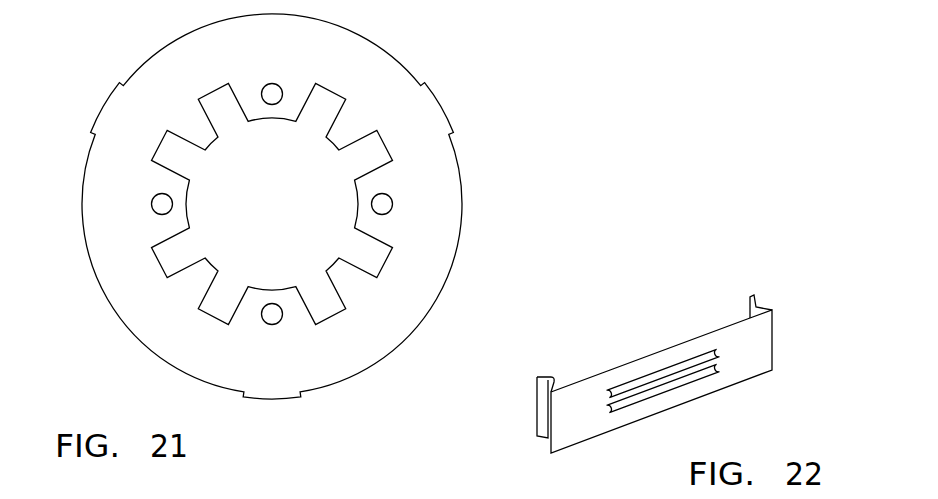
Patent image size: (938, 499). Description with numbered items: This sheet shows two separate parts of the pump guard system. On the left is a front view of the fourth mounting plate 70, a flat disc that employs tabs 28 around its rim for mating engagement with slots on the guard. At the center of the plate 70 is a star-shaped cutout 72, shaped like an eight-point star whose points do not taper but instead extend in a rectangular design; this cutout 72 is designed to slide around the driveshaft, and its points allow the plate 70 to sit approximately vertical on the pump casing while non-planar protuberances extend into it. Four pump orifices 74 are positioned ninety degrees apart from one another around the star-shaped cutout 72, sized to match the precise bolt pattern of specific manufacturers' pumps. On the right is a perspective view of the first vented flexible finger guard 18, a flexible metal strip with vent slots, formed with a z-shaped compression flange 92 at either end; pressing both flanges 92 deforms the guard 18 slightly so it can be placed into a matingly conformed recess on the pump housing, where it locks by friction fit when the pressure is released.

In FIG. 21, the fourth mounting plate 70 is at (96, 71).
In FIG. 21, the tabs 28 is at (444, 103).
In FIG. 21, the star-shaped cutout 72 is at (280, 202).
In FIG. 21, the pump orifices 74 is at (283, 87).
In FIG. 22, the first vented flexible finger guard 18 is at (662, 298).
In FIG. 22, the z-shaped compression flange 92 is at (546, 377).